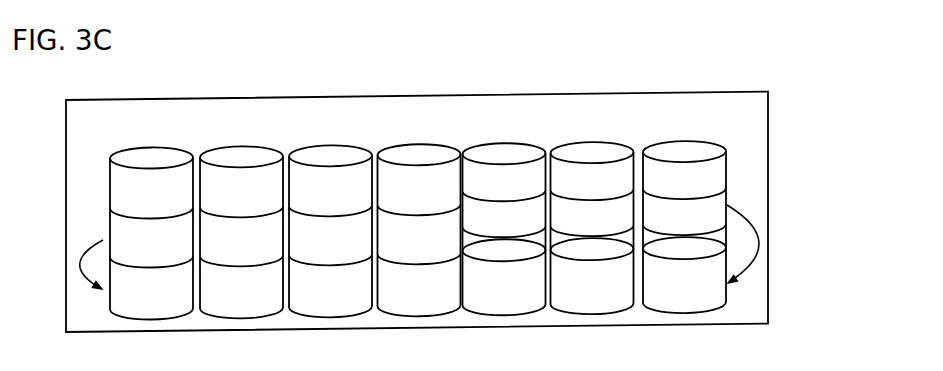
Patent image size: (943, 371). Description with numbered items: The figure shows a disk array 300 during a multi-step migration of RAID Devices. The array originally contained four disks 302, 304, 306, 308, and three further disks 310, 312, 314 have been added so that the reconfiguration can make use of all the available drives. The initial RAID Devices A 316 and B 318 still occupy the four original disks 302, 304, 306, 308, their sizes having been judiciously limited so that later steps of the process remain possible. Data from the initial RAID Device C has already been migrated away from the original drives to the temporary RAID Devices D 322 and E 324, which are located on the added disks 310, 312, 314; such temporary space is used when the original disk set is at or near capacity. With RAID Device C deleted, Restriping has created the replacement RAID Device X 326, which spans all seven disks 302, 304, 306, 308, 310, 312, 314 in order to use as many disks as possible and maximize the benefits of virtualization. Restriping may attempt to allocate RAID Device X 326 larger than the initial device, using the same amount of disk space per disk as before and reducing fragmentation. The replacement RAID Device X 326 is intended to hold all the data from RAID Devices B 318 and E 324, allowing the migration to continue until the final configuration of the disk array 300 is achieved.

The disk array 300 is at (781, 117).
The disk 302 is at (127, 176).
The disk 304 is at (264, 147).
The disk 306 is at (353, 145).
The disk 308 is at (443, 144).
The disk 310 is at (527, 143).
The disk 312 is at (615, 141).
The disk 314 is at (742, 173).
The RAID Device A 316 is at (110, 178).
The RAID Device B 318 is at (110, 228).
The temporary RAID Device D 322 is at (727, 169).
The temporary RAID Device E 324 is at (727, 201).
The replacement RAID Device X 326 is at (110, 298).